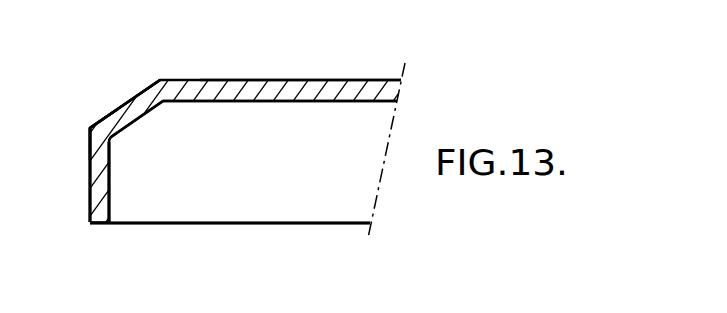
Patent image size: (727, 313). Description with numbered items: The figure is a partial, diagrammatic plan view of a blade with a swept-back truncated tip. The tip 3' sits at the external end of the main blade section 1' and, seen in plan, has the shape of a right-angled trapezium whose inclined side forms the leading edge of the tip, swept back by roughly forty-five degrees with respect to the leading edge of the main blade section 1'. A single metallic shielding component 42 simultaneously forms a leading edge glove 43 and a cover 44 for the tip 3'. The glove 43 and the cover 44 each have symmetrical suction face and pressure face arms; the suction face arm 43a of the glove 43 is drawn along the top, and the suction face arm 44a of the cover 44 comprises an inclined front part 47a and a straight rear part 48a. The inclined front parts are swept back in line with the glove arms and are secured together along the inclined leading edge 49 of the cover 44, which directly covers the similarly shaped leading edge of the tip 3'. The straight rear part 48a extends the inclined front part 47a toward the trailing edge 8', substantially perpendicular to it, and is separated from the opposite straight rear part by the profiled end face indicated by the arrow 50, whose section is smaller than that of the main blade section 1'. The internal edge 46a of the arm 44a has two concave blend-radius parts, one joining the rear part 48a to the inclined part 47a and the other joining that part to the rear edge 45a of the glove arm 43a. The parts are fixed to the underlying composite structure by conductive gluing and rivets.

The metallic shielding component 42 is at (160, 80).
The leading edge glove 43 is at (351, 82).
The suction face arm of the glove 43a is at (283, 92).
The cover 44 is at (90, 128).
The suction face arm of the cover 44a is at (99, 138).
The rear edge of the glove arm 45a is at (228, 102).
The internal edge of the cover arm 46a is at (109, 177).
The inclined front part 47a is at (140, 100).
The straight rear part 48a is at (97, 202).
The inclined leading edge of the cap 49 is at (118, 108).
The profiled end face 50 is at (89, 173).
The tip 3' is at (230, 249).
The trailing edge 8' is at (230, 248).
The main blade section 1' is at (247, 167).